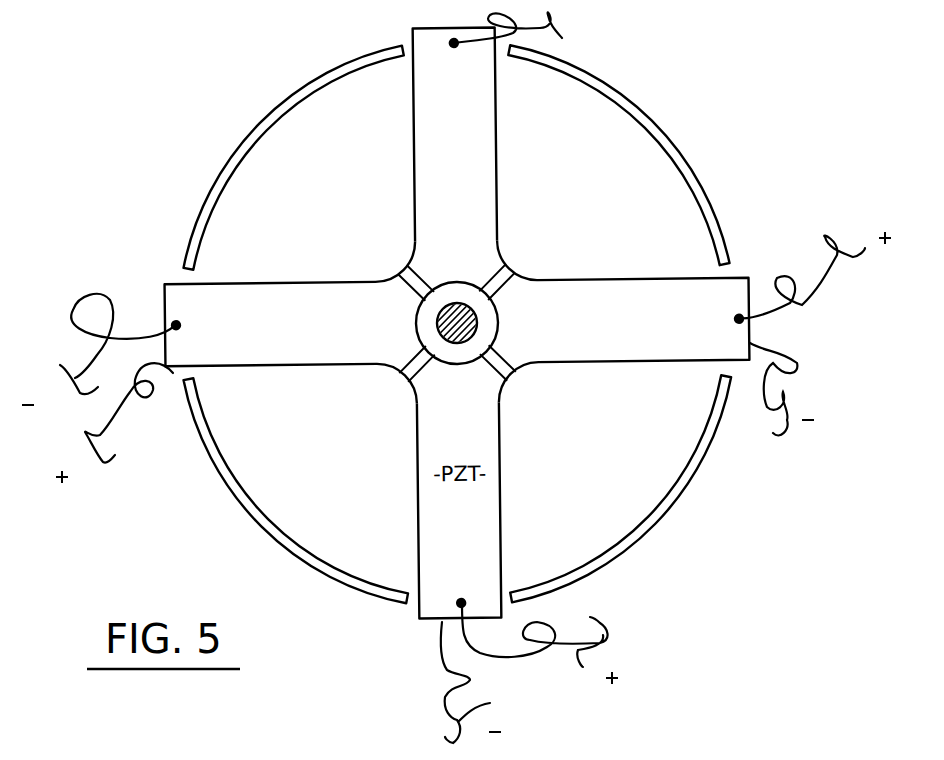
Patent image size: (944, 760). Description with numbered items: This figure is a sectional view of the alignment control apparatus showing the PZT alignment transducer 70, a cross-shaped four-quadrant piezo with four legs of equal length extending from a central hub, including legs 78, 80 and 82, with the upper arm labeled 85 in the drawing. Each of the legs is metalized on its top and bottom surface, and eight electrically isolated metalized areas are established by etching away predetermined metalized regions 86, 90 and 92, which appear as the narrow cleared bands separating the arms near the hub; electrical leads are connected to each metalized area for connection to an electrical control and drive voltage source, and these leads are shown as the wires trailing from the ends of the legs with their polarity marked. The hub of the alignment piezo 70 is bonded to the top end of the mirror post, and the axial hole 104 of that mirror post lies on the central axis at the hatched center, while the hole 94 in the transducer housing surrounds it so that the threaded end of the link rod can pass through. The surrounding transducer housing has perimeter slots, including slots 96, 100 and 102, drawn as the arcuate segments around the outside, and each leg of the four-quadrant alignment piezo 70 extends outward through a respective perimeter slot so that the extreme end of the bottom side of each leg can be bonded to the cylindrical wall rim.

The PZT alignment transducer 70 is at (162, 308).
The leg 78 is at (623, 320).
The leg 80 is at (503, 272).
The leg 82 is at (290, 323).
The top electrode arm 85 is at (455, 135).
The etched-away metalized region 86 is at (505, 368).
The etched-away metalized region 90 is at (410, 272).
The etched-away metalized region 92 is at (410, 370).
The hole 94 is at (500, 301).
The perimeter slot 96 is at (508, 600).
The perimeter slot 100 is at (405, 46).
The perimeter slot 102 is at (184, 372).
The axial hole 104 is at (452, 312).